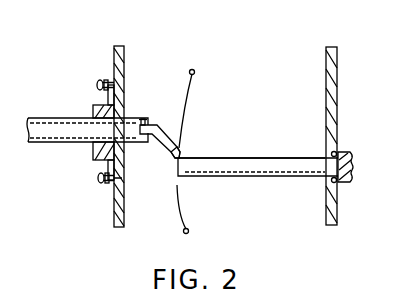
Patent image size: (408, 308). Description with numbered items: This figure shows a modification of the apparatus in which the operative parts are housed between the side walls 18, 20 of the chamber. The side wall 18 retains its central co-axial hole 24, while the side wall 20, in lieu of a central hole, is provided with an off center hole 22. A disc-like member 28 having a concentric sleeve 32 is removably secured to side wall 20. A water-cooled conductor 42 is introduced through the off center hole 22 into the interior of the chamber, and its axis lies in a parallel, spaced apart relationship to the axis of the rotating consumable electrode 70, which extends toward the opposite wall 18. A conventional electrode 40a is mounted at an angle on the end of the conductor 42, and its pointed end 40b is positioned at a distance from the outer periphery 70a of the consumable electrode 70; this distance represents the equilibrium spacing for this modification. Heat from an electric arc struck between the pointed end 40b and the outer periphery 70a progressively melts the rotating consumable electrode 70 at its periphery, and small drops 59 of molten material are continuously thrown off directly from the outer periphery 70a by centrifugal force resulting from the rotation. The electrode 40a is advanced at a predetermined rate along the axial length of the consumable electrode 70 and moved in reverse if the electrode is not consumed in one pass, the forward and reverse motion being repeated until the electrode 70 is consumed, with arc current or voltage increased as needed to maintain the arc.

The side wall 18 is at (337, 76).
The side wall 20 is at (114, 212).
The off center hole 22 is at (118, 165).
The central co-axial hole 24 is at (325, 179).
The disc-like member 28 is at (97, 86).
The concentric sleeve 32 is at (96, 163).
The conventional electrode 40a is at (169, 138).
The pointed end 40b is at (174, 156).
The water-cooled conductor 42 is at (55, 143).
The small drops of molten material 59 is at (197, 71).
The consumable electrode 70 is at (250, 177).
The outer periphery 70a is at (233, 158).